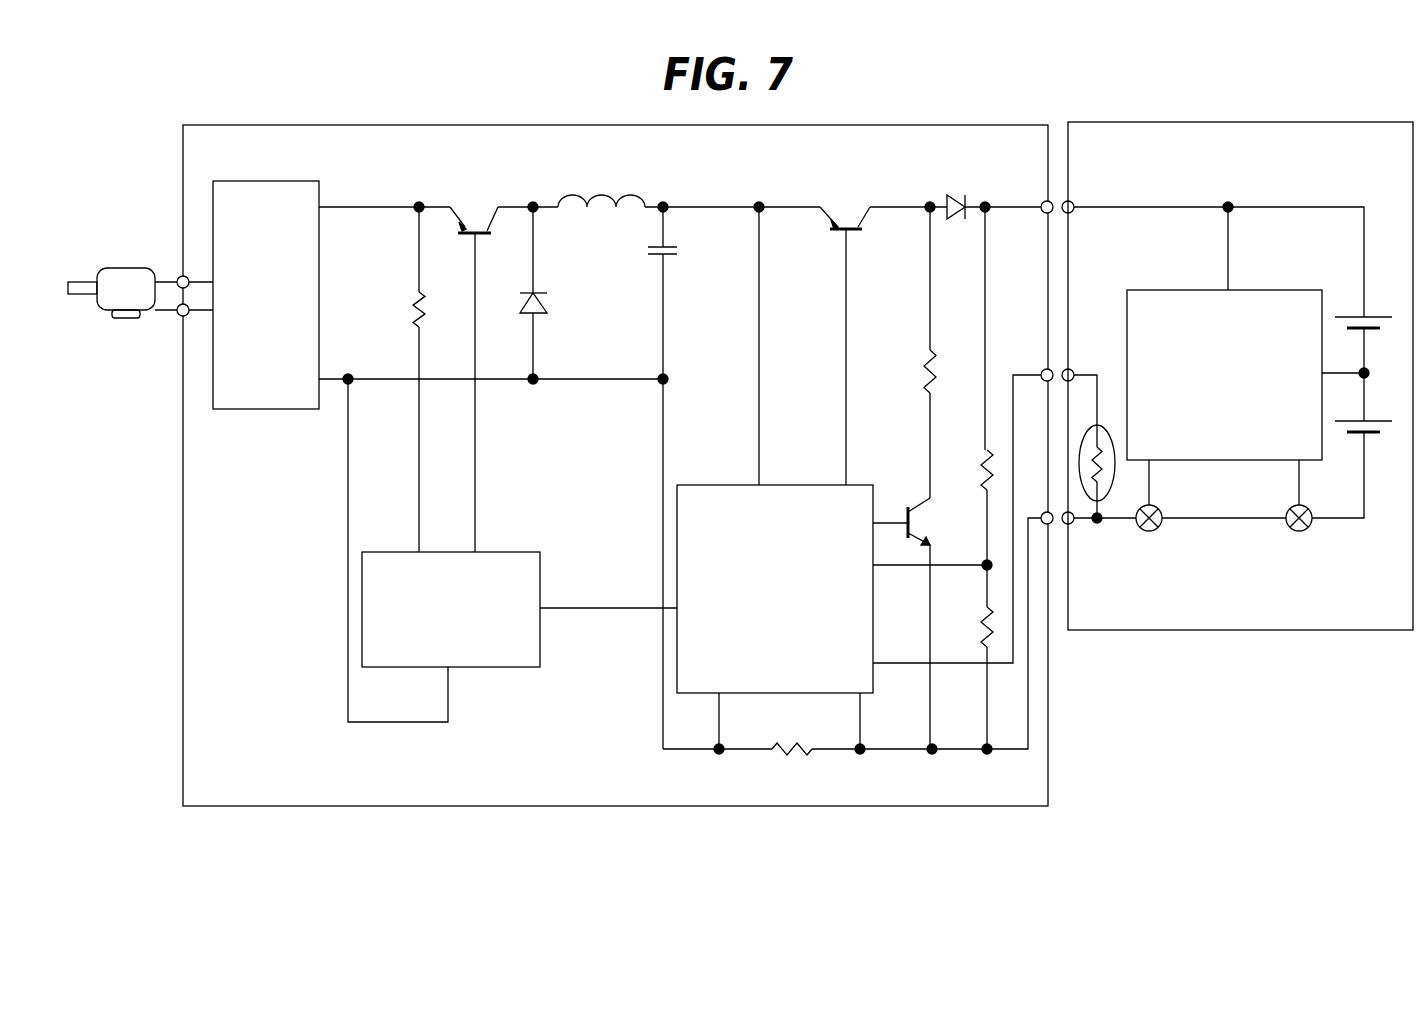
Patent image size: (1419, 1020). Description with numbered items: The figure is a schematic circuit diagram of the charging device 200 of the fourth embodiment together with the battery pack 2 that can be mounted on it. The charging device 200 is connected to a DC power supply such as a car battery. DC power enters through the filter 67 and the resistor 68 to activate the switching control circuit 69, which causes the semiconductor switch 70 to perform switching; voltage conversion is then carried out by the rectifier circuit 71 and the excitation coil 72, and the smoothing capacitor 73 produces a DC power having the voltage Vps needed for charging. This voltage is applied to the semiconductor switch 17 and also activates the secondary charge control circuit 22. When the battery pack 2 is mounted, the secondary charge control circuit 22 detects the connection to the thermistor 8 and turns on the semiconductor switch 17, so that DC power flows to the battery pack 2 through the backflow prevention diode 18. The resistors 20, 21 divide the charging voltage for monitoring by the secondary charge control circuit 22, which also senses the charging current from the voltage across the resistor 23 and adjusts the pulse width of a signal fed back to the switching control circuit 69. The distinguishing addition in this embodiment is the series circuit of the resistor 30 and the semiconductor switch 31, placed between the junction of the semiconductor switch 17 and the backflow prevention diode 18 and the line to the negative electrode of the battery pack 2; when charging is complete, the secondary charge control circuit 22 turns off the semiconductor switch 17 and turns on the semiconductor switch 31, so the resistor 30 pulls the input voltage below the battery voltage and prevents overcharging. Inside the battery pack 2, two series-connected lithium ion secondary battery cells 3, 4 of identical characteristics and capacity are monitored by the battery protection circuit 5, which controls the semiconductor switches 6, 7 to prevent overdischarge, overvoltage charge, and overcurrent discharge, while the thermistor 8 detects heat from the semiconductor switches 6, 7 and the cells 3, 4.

The charging device 200 is at (183, 180).
The filter 67 is at (308, 181).
The resistor 68 is at (419, 292).
The semiconductor switch 70 is at (462, 237).
The rectifier circuit 71 is at (540, 292).
The excitation coil 72 is at (603, 195).
The smoothing capacitor 73 is at (670, 256).
The semiconductor switch 17 is at (836, 235).
The backflow prevention diode 18 is at (950, 193).
The resistor 30 is at (928, 350).
The resistor 20 is at (985, 450).
The resistor 21 is at (985, 620).
The semiconductor switch 31 is at (906, 506).
The secondary charge control circuit 22 is at (856, 483).
The resistor 23 is at (785, 755).
The switching control circuit 69 is at (475, 668).
The battery pack 2 is at (1297, 630).
The battery protection circuit 5 is at (1300, 290).
The thermistor 8 is at (1107, 425).
The lithium ion secondary battery cell 3 is at (1374, 331).
The lithium ion secondary battery cell 4 is at (1374, 434).
The semiconductor switch 7 is at (1155, 530).
The semiconductor switch 6 is at (1305, 530).